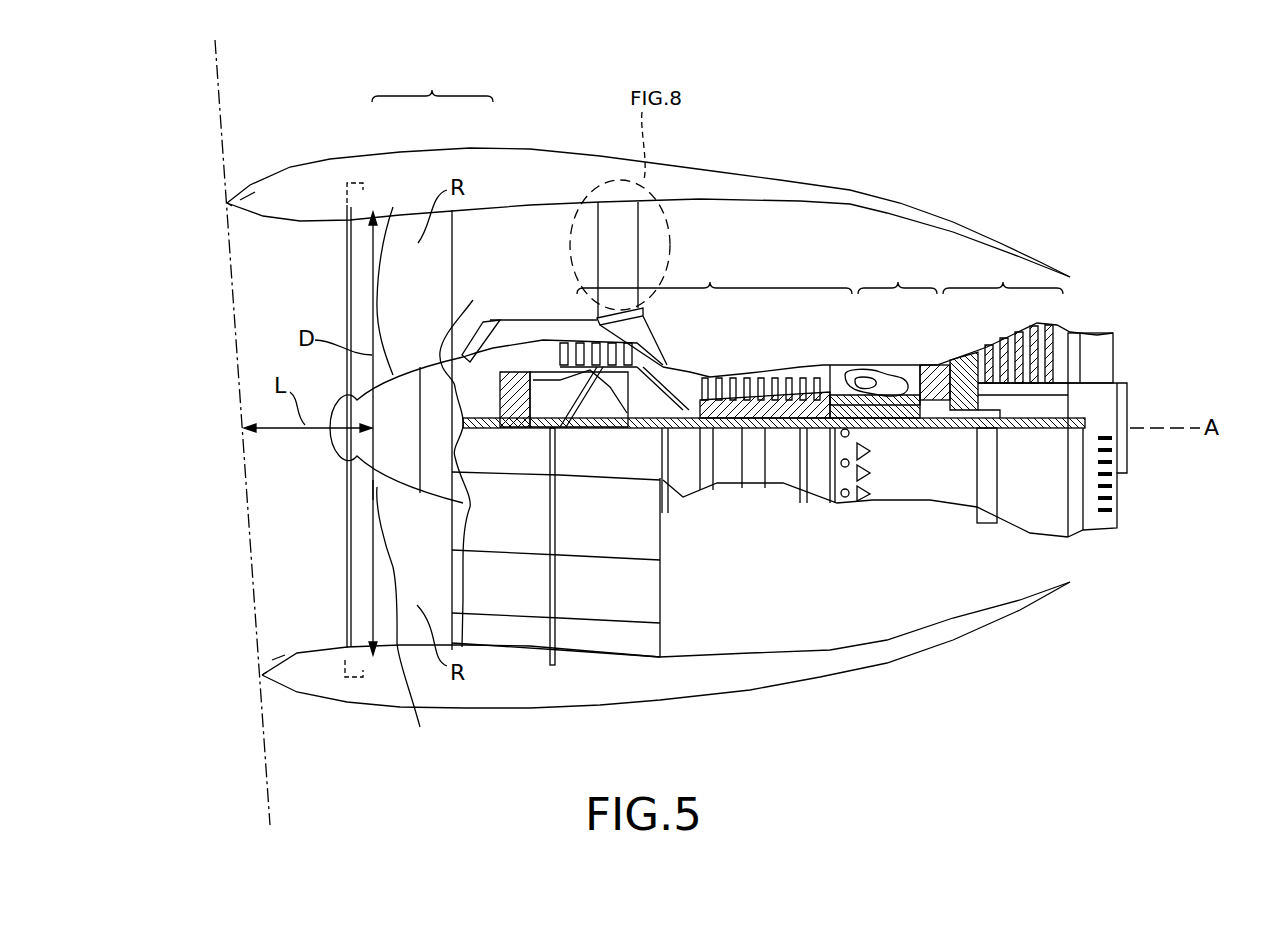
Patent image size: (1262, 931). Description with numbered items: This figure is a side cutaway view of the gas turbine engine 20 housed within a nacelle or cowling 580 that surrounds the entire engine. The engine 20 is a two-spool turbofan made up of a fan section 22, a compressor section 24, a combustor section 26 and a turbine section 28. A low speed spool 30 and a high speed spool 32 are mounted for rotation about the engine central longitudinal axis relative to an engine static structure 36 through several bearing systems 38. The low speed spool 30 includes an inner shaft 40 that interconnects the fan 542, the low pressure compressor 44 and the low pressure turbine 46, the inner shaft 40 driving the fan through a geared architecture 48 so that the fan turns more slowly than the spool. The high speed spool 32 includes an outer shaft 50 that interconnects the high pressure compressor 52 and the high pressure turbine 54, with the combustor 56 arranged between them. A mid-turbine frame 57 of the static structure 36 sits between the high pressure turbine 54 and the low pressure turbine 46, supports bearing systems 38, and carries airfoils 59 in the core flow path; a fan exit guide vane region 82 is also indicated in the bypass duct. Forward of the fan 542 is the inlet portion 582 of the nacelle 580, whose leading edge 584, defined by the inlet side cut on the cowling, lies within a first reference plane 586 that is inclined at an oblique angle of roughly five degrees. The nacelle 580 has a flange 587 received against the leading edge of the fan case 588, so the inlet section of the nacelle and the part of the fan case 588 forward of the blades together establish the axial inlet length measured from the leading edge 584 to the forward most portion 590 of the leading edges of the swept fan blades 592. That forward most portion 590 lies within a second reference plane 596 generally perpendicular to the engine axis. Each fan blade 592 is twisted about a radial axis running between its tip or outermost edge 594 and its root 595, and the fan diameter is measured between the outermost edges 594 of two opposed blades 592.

The gas turbine engine 20 is at (1007, 228).
The fan section 22 is at (432, 80).
The compressor section 24 is at (714, 275).
The combustor section 26 is at (897, 275).
The turbine section 28 is at (1003, 275).
The low speed spool 30 is at (790, 445).
The high speed spool 32 is at (822, 370).
The engine static structure 36 is at (820, 515).
The bearing systems 38 is at (623, 430).
The inner shaft 40 is at (681, 432).
The low pressure compressor 44 is at (610, 352).
The low pressure turbine 46 is at (1037, 340).
The geared architecture 48 is at (521, 433).
The outer shaft 50 is at (872, 413).
The high pressure compressor 52 is at (752, 370).
The high pressure turbine 54 is at (925, 368).
The combustor 56 is at (875, 378).
The mid-turbine frame 57 is at (960, 346).
The airfoils 59 is at (962, 375).
The fan exit guide vane 82 is at (632, 260).
The fan 542 is at (472, 251).
The nacelle 580 is at (388, 695).
The inlet portion 582 is at (262, 240).
The leading edge 584 is at (227, 203).
The first reference plane 586 is at (219, 90).
The flange 587 is at (344, 196).
The fan case 588 is at (352, 602).
The forward most portion 590 is at (350, 307).
The fan blades 592 is at (411, 312).
The outermost edge 594 is at (393, 207).
The root 595 is at (497, 567).
The second reference plane 596 is at (373, 490).